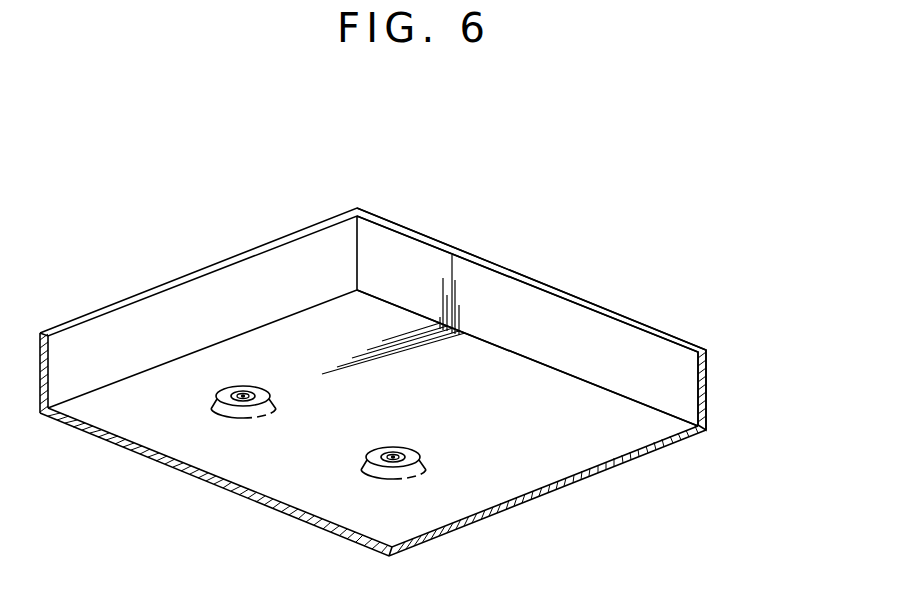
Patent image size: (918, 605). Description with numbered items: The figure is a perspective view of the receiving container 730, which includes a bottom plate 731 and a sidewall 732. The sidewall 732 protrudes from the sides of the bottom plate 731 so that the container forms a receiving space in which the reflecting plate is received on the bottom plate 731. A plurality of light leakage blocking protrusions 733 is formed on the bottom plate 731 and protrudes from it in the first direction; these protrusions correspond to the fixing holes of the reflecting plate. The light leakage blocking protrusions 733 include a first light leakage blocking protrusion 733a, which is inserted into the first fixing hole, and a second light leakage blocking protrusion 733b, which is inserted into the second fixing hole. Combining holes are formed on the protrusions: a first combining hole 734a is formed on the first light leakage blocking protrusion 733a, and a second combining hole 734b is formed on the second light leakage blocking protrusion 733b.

The receiving container 730 is at (497, 148).
The bottom plate 731 is at (582, 455).
The sidewall 732 is at (683, 382).
The light leakage blocking protrusions 733 is at (227, 585).
The first light leakage blocking protrusion 733a is at (229, 410).
The second light leakage blocking protrusion 733b is at (379, 470).
The first combining hole 734a is at (244, 394).
The second combining hole 734b is at (396, 455).